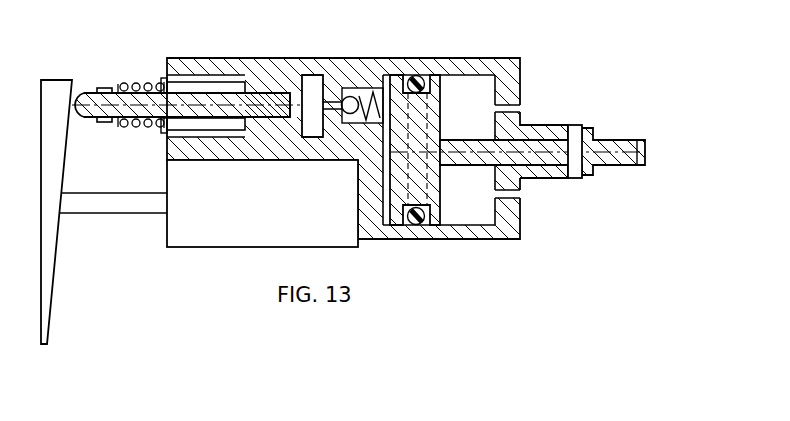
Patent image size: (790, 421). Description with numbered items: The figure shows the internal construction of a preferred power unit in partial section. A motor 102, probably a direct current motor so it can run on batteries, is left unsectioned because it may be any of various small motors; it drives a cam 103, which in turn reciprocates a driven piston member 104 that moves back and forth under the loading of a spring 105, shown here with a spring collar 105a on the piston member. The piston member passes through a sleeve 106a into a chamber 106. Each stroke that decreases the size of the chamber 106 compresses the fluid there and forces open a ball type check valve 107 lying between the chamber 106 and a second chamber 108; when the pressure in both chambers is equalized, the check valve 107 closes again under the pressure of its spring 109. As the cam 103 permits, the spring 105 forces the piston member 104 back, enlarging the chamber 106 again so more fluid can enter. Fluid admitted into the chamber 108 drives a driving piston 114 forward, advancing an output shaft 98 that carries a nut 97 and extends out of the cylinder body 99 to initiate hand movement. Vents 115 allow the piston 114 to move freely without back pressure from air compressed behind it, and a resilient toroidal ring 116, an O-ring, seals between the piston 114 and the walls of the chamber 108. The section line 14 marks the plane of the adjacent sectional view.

The section line 14- 14 is at (72, 102).
The nut on piston rod 97 is at (573, 125).
The output shaft 98 is at (533, 140).
The cylinder body 99 is at (495, 238).
The motor 102 is at (214, 244).
The cam 103 is at (50, 312).
The driven piston member 104 is at (208, 90).
The spring 105 is at (140, 83).
The spring collar 105a is at (100, 88).
The chamber 106 is at (314, 122).
The plunger sleeve 106a is at (252, 75).
The ball type check valve 107 is at (348, 95).
The chamber 108 is at (396, 80).
The spring 109 is at (368, 90).
The driving piston 114 is at (433, 83).
The vents 115 is at (518, 106).
The resilient toroidal ring 116 is at (425, 230).